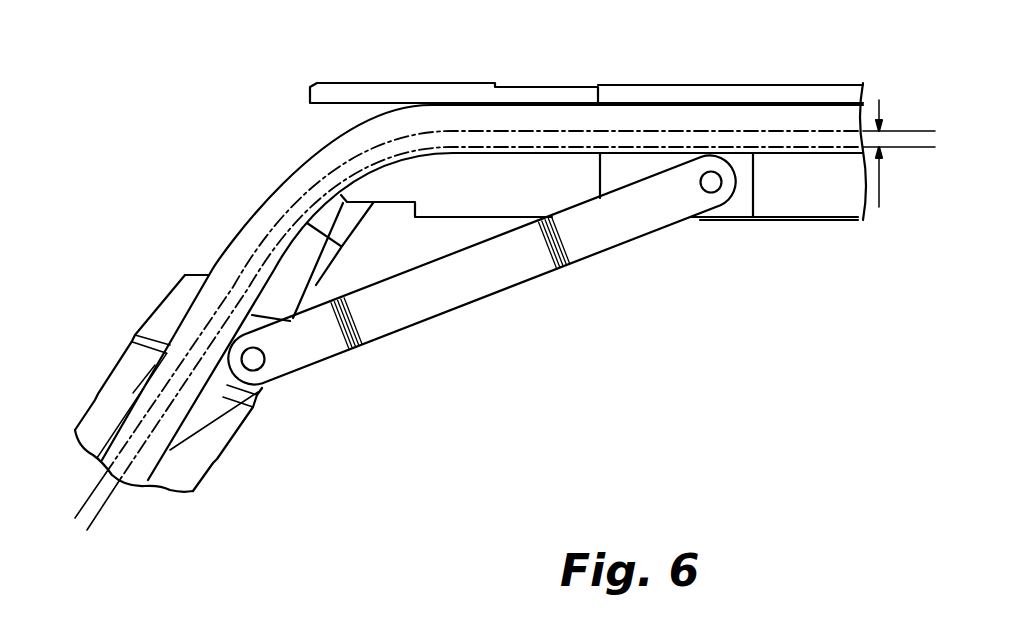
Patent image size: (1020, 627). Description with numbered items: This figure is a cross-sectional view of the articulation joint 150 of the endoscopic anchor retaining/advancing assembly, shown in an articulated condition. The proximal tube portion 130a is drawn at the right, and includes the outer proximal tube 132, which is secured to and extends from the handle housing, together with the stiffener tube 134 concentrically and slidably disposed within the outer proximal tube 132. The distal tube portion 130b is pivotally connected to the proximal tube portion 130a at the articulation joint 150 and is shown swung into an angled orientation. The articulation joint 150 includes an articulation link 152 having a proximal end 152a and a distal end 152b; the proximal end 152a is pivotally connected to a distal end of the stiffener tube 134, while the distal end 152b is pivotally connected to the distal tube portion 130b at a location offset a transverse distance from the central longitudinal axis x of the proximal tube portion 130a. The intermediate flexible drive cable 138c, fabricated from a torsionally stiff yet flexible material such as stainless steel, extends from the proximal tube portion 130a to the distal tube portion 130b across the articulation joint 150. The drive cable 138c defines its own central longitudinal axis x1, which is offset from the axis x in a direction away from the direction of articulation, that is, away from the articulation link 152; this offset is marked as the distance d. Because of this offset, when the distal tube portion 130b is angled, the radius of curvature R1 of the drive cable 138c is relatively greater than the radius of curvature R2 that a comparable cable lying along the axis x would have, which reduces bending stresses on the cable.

The articulation joint 150 is at (227, 172).
The intermediate flexible drive cable 138c is at (233, 246).
The proximal tube portion 130a is at (835, 227).
The distal tube portion 130b is at (245, 449).
The outer proximal tube 132 is at (797, 225).
The stiffener tube 134 is at (780, 203).
The articulation link 152 is at (492, 299).
The proximal end of articulation link 152a is at (703, 197).
The distal end of articulation link 152b is at (272, 371).
The radius of curvature of intermediate flexible drive cable R1 is at (303, 187).
The radius of curvature of comparable flexible drive cable R2 is at (325, 190).
The central longitudinal axis of intermediate flexible drive cable x1 is at (495, 309).
The central longitudinal axis of proximal tube portion x is at (516, 350).
The offset distance d is at (875, 155).